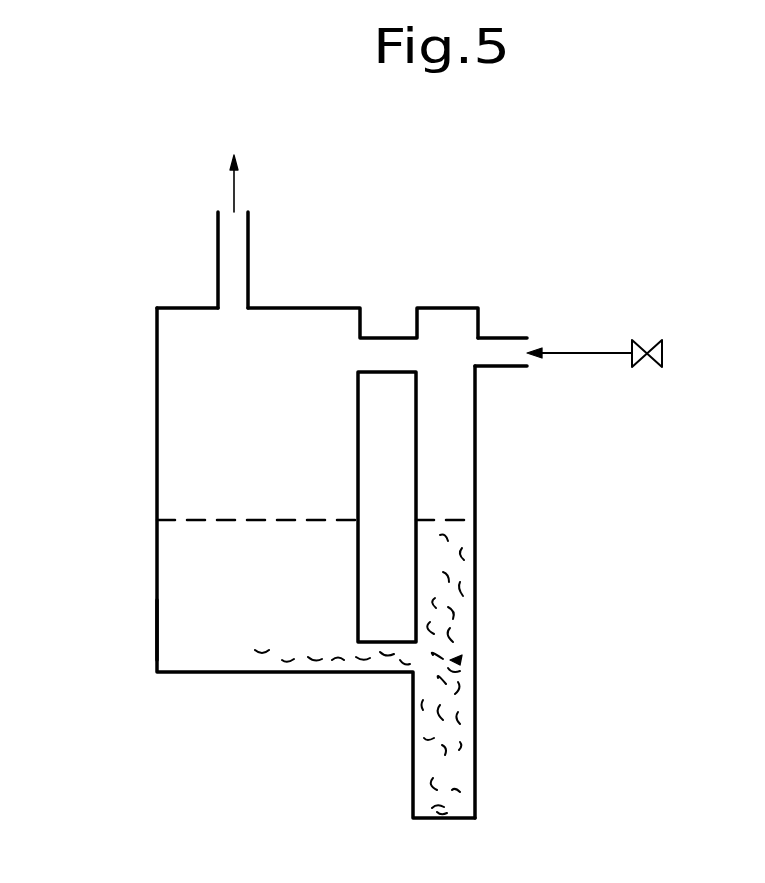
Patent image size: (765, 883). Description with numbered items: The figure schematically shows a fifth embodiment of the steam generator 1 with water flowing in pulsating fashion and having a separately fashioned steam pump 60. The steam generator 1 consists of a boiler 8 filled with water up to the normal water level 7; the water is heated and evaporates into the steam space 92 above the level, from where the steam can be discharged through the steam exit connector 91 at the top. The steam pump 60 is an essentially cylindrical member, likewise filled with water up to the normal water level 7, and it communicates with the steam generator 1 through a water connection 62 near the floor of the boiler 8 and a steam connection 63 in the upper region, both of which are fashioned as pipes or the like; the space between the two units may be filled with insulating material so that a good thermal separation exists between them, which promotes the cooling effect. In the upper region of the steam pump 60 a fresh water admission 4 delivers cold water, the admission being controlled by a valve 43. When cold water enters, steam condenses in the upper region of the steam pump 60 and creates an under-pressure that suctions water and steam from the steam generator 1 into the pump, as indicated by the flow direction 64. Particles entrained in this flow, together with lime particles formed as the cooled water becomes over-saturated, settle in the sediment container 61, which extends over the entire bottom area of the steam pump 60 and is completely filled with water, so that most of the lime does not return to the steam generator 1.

The steam generator 1 is at (220, 635).
The fresh water admission 4 is at (507, 350).
The normal water level 7 is at (157, 520).
The boiler 8 is at (175, 598).
The valve 43 is at (644, 352).
The steam pump 60 is at (458, 489).
The sediment container 61 is at (458, 802).
The water connection 62 is at (385, 662).
The steam connection 63 is at (378, 350).
The flow direction 64 is at (456, 661).
The steam exit connector 91 is at (234, 189).
The steam space 92 is at (195, 420).